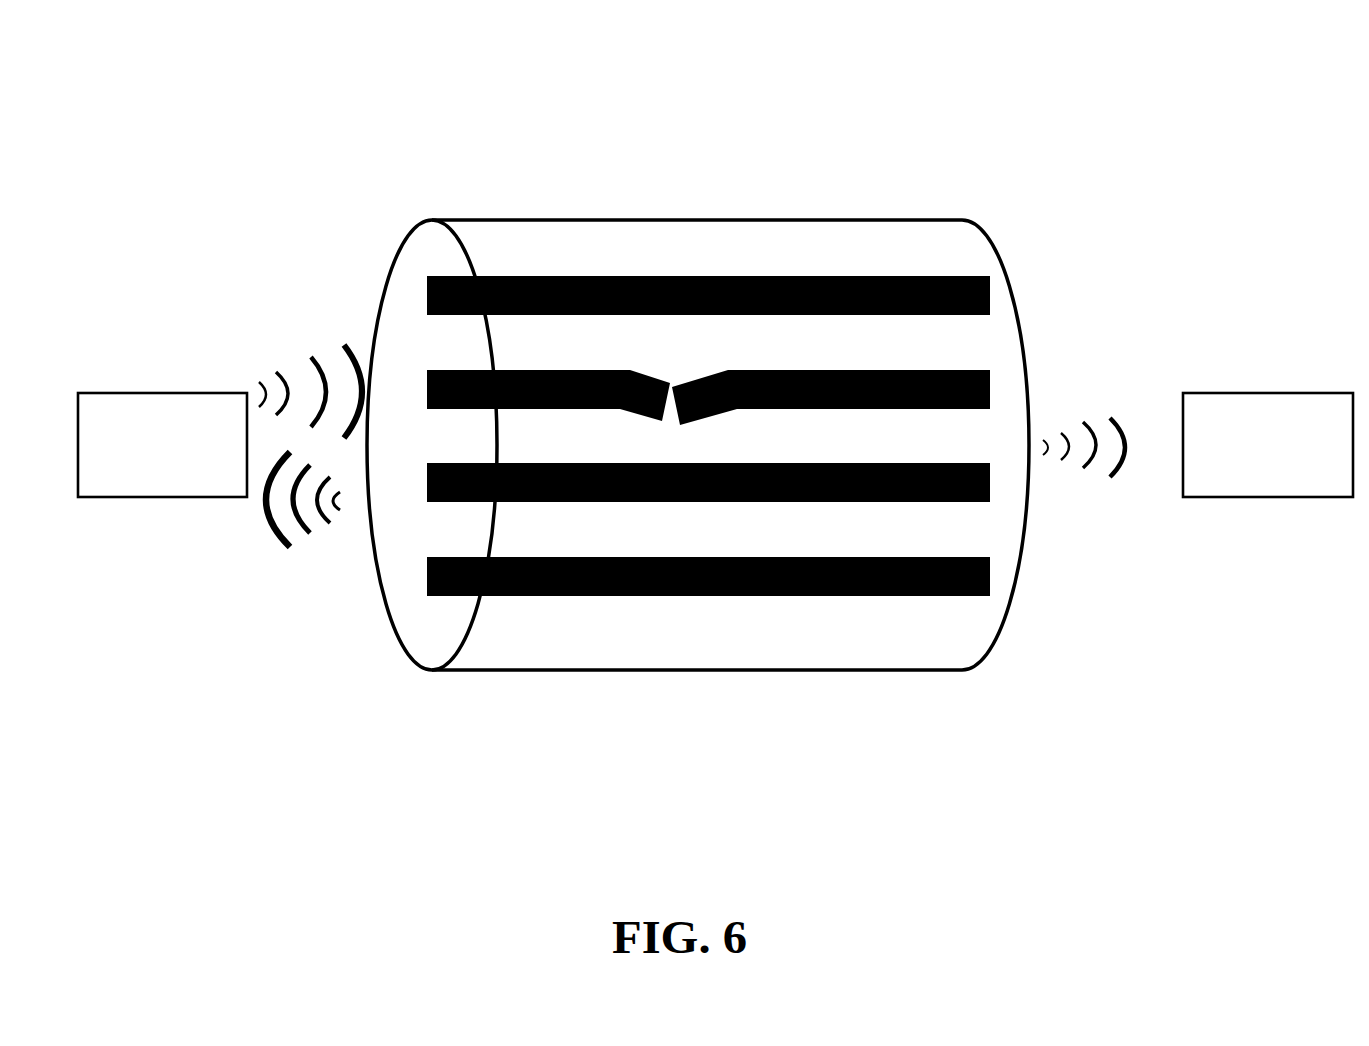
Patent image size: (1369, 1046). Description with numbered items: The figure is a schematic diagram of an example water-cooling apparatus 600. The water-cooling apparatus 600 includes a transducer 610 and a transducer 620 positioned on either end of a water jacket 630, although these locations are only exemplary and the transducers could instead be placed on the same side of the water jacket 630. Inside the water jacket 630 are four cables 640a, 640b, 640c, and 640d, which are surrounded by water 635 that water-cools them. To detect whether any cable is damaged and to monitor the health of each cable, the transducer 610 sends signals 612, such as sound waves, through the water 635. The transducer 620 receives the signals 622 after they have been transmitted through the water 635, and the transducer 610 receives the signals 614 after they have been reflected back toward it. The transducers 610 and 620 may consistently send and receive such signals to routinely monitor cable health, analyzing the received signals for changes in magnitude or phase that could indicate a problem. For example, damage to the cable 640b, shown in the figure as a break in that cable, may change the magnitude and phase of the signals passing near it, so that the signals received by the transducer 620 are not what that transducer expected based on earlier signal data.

The water-cooling apparatus 600 is at (142, 116).
The transducer 610 is at (186, 476).
The signals 612 is at (286, 350).
The signals 614 is at (320, 538).
The transducer 620 is at (1293, 476).
The signals 622 is at (1142, 430).
The water jacket 630 is at (510, 219).
The water 635 is at (433, 247).
The cable 640a is at (990, 287).
The cable 640b is at (990, 385).
The cable 640c is at (990, 476).
The cable 640d is at (990, 568).